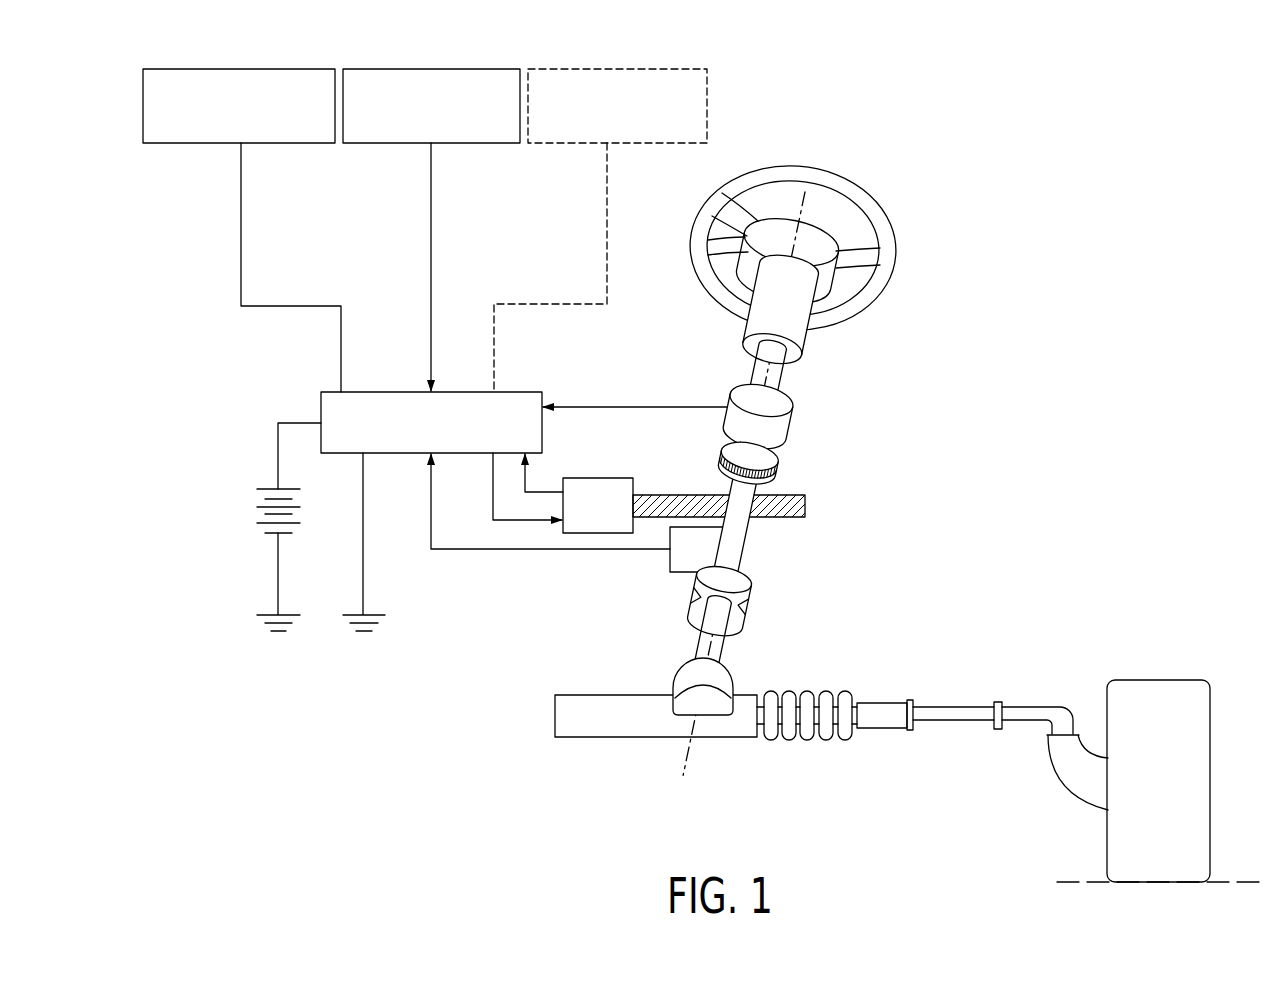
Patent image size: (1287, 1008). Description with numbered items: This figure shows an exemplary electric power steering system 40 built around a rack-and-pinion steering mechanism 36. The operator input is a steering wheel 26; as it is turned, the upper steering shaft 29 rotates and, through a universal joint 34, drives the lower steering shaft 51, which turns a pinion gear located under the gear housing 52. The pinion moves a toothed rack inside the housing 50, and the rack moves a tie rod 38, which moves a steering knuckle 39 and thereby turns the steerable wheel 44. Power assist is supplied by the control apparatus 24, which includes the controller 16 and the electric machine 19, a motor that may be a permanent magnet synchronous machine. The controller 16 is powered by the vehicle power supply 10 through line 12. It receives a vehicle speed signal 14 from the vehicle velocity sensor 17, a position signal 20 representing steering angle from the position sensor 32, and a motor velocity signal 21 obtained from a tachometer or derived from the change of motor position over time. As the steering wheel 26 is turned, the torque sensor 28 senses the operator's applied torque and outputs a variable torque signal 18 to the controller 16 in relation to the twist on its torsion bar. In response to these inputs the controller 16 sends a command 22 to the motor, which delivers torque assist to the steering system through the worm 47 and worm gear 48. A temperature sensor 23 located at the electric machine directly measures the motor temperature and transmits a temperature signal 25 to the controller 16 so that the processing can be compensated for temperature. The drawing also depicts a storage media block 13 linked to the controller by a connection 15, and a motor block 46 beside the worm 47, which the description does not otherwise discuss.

The vehicle power supply 10 is at (265, 512).
The line 12 is at (295, 421).
The storage media 13 is at (243, 69).
The vehicle speed signal 14 is at (431, 288).
The storage media connection 15 is at (241, 209).
The controller 16 is at (400, 392).
The vehicle velocity sensor 17 is at (433, 69).
The variable torque signal 18 is at (618, 328).
The electric machine 19 is at (645, 407).
The position signal 20 is at (551, 550).
The motor velocity signal 21 is at (551, 490).
The command 22 is at (508, 521).
The temperature sensor 23 is at (611, 69).
The control apparatus 24 is at (983, 395).
The temperature signal 25 is at (610, 183).
The steering wheel 26 is at (848, 195).
The torque sensor 28 is at (785, 408).
The upper steering shaft 29 is at (752, 371).
The position sensor 32 is at (668, 563).
The universal joint 34 is at (745, 600).
The steering mechanism 36 is at (838, 684).
The tie rod 38 is at (950, 718).
The steering knuckle 39 is at (1075, 770).
The electric power steering system 40 is at (1066, 495).
The steerable wheel 44 is at (1145, 696).
The electric motor 46 is at (610, 478).
The worm 47 is at (798, 507).
The worm gear 48 is at (770, 464).
The housing 50 is at (595, 727).
The lower steering shaft 51 is at (719, 653).
The gear housing 52 is at (680, 676).